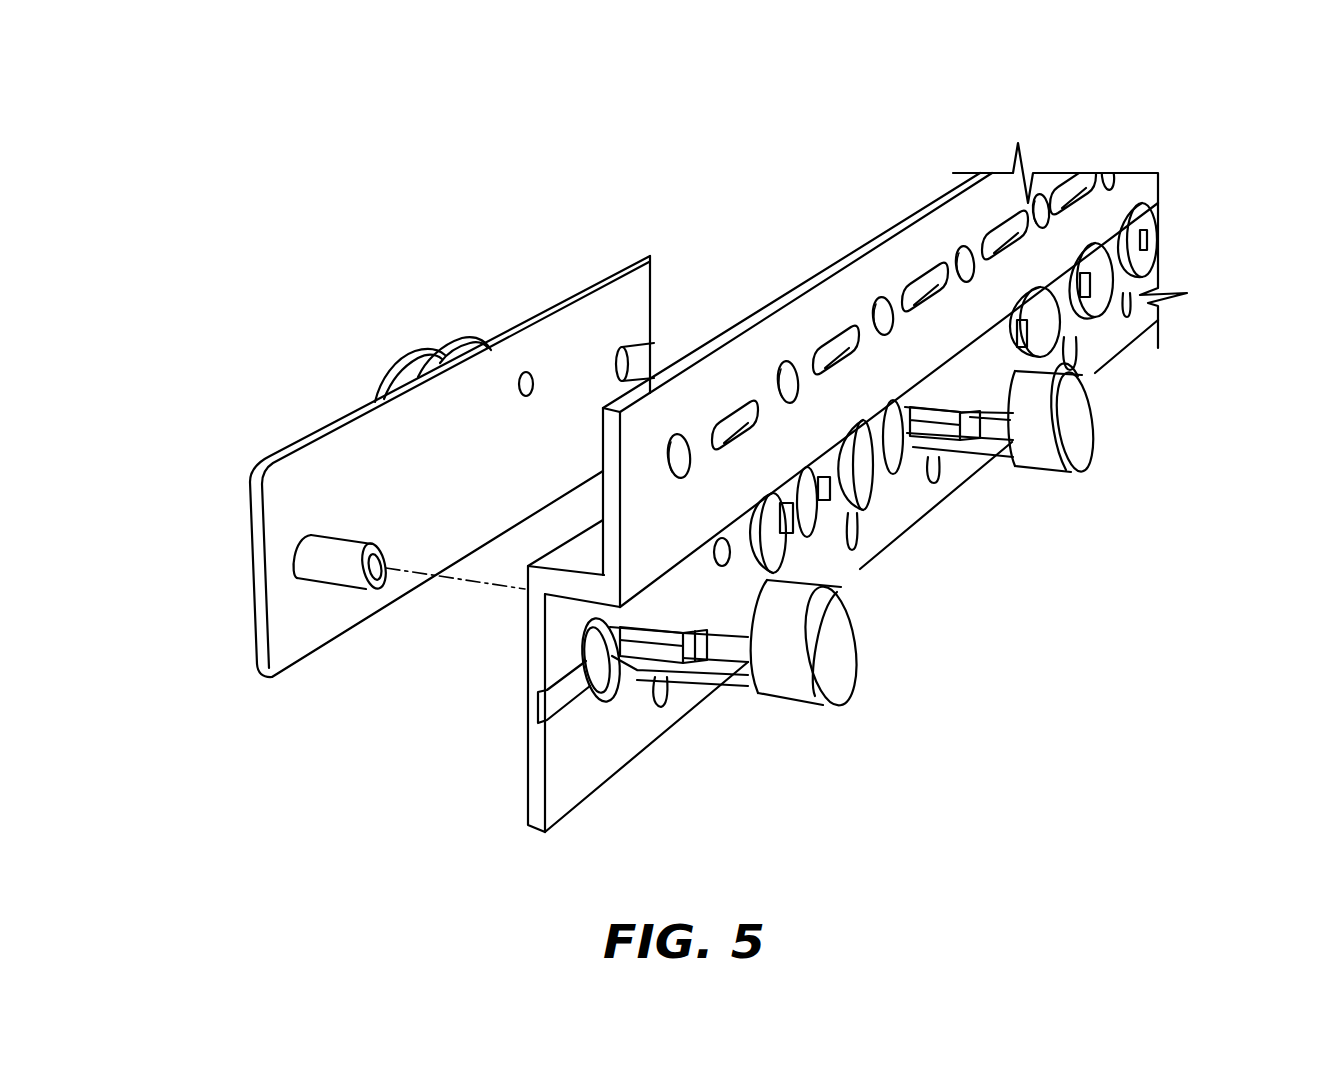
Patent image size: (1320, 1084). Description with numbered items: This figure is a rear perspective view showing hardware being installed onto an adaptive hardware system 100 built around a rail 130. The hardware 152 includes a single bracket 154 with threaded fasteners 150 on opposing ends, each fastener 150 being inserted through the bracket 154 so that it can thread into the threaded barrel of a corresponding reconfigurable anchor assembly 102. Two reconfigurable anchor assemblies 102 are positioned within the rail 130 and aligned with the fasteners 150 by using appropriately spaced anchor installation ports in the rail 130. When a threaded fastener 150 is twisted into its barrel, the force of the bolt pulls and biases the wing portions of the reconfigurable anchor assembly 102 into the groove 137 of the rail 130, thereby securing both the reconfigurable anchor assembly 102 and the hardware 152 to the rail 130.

The lighting system 100 is at (836, 459).
The reconfigurable anchor assembly 102 is at (868, 642).
The rail 130 is at (1120, 191).
The groove 137 is at (545, 701).
The threaded fastener 150 is at (650, 356).
The hardware 152 is at (316, 370).
The bracket 154 is at (377, 477).